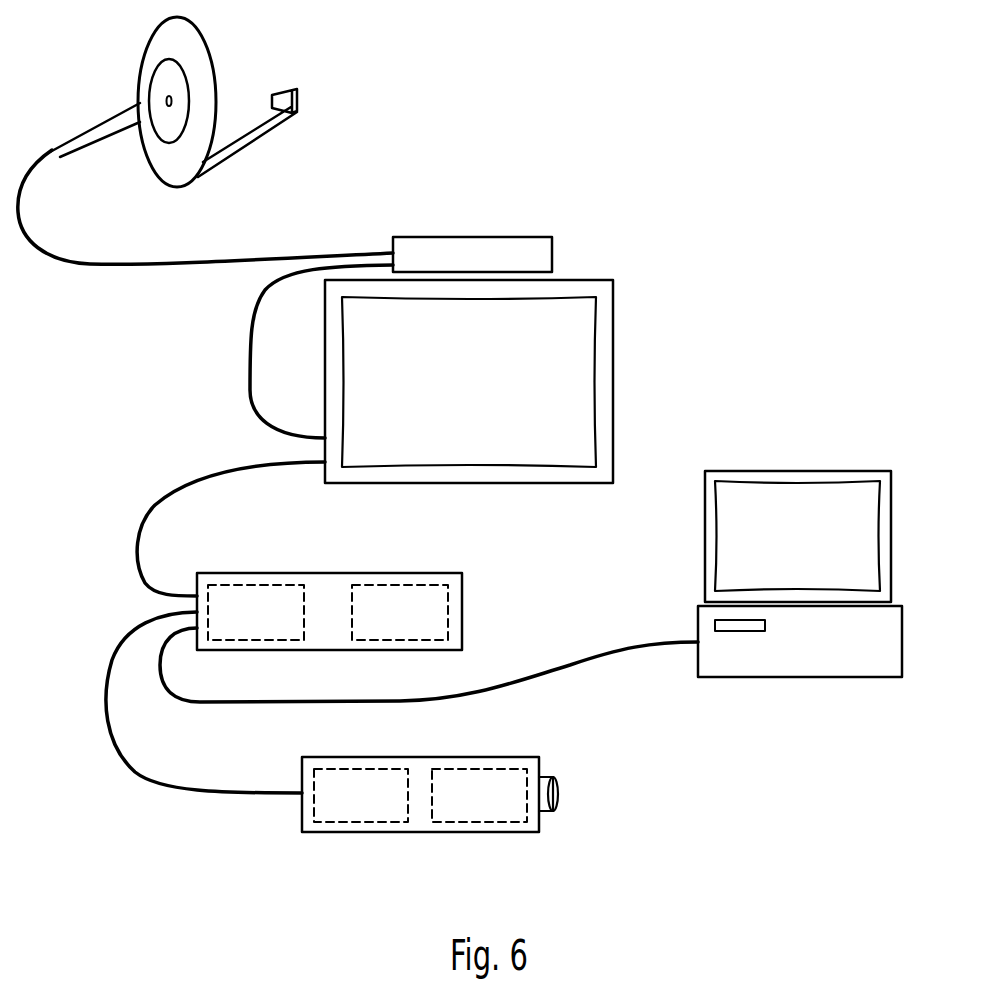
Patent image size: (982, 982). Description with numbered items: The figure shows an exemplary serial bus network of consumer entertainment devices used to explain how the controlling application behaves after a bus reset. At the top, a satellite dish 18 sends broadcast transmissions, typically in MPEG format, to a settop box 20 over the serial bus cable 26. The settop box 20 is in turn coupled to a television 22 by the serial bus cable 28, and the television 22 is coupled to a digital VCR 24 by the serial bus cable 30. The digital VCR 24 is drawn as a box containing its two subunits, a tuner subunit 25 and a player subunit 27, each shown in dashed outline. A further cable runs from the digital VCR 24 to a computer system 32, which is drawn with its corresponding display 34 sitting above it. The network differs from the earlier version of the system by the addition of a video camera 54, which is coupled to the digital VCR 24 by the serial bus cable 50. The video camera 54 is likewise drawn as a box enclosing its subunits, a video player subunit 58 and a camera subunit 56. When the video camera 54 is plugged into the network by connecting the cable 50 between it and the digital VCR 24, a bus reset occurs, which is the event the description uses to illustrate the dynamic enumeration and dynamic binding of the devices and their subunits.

The satellite dish 18 is at (213, 58).
The settop box 20 is at (530, 237).
The television 22 is at (613, 355).
The digital VCR 24 is at (329, 610).
The tuner subunit 25 is at (257, 640).
The IEEE 1394-1995 cable 26 is at (215, 258).
The player subunit 27 is at (403, 640).
The IEEE 1394-1995 cable 28 is at (250, 362).
The IEEE 1394-1995 cable 30 is at (168, 490).
The computer system 32 is at (780, 677).
The display 34 is at (705, 539).
The IEEE 1394-1995 serial bus cable 50 is at (208, 793).
The video camera 54 is at (430, 792).
The camera subunit 56 is at (362, 822).
The video player subunit 58 is at (483, 822).